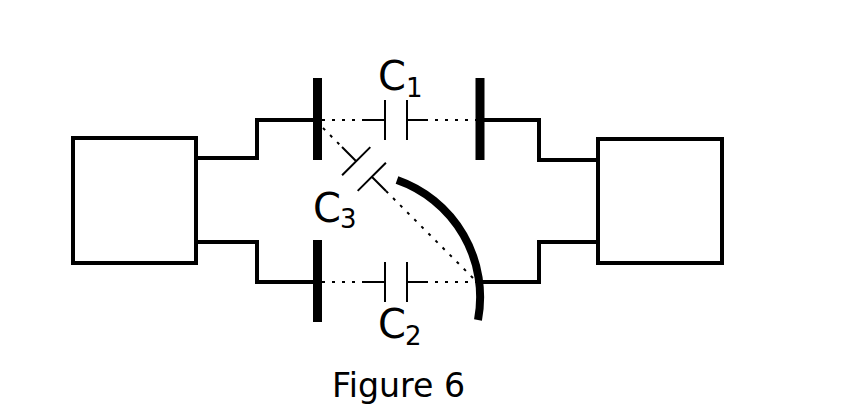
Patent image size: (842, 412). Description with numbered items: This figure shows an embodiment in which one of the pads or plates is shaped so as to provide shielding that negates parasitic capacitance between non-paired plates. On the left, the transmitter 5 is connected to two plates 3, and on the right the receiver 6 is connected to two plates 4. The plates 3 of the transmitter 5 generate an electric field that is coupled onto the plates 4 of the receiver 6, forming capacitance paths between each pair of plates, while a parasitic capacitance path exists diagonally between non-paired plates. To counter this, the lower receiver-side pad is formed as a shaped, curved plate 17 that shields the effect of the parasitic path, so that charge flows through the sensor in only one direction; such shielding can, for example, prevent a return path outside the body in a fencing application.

The plates of the transmitter 3 is at (322, 82).
The plates of the receiver 4 is at (485, 82).
The transmitter 5 is at (137, 138).
The receiver 6 is at (662, 137).
The curved plate / movable electrode 17 is at (450, 222).